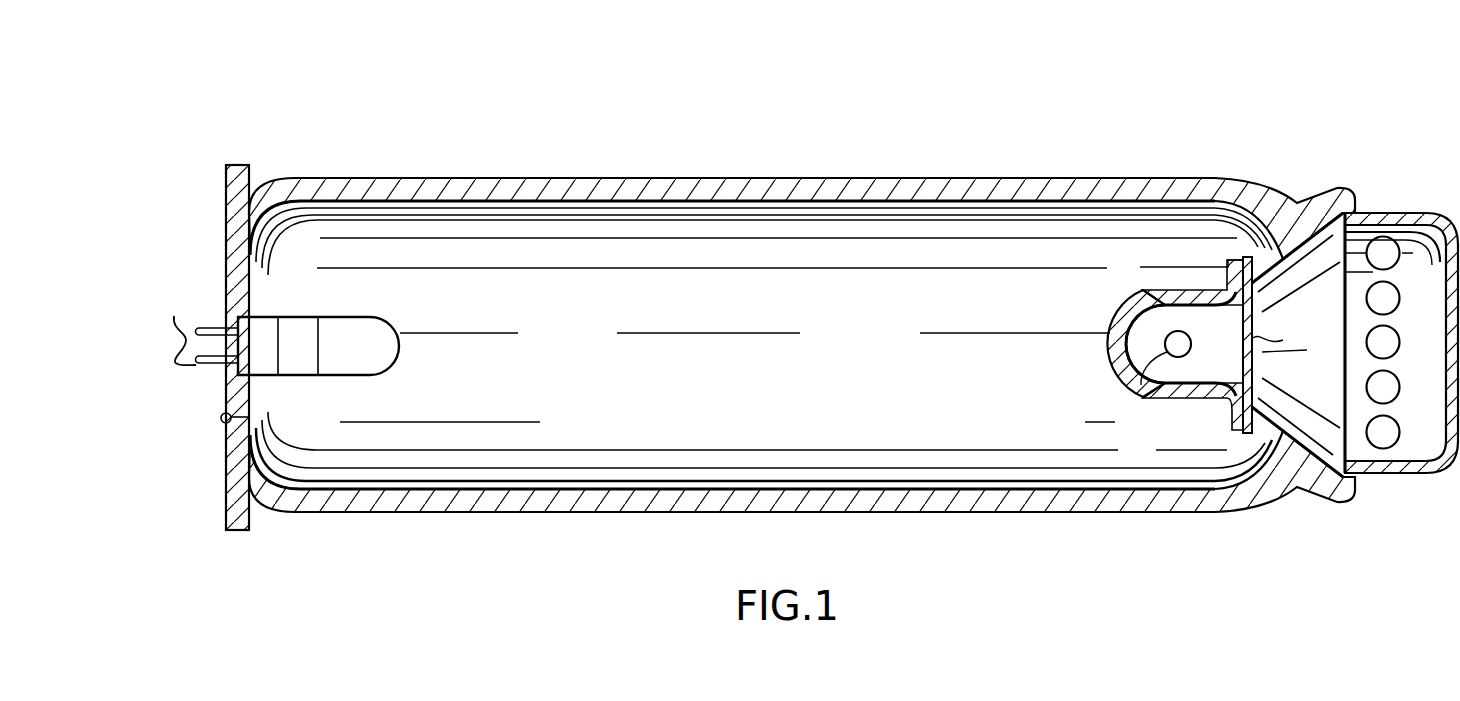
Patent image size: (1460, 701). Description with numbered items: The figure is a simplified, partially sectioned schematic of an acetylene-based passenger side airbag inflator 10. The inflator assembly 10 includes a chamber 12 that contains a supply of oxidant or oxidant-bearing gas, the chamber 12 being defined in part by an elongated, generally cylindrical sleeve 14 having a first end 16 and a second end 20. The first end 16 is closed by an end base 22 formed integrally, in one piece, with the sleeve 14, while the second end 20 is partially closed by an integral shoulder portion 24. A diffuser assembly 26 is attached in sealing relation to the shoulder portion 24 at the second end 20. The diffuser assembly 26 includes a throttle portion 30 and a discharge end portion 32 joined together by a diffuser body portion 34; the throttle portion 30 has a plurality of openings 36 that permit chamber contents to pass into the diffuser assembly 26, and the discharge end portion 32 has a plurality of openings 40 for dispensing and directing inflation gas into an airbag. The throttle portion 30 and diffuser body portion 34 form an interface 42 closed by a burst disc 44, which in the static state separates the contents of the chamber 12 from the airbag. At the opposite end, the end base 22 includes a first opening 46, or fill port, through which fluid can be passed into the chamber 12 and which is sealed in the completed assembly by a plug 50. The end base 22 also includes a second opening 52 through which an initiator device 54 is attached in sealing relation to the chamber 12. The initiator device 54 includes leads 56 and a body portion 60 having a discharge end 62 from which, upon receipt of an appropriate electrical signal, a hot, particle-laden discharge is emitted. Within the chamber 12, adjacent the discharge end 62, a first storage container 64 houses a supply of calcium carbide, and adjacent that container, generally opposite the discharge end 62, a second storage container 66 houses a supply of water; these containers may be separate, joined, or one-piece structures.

The airbag inflator 10 is at (873, 106).
The chamber 12 is at (606, 228).
The sleeve 14 is at (712, 186).
The first end 16 is at (268, 173).
The second end 20 is at (1308, 183).
The end base 22 is at (232, 205).
The shoulder portion 24 is at (1273, 491).
The diffuser assembly 26 is at (1341, 187).
The throttle portion 30 is at (1143, 290).
The discharge end portion 32 is at (1412, 213).
The diffuser body portion 34 is at (1318, 478).
The openings 36 is at (1177, 394).
The openings 40 is at (1385, 449).
The interface 42 is at (1247, 257).
The burst disc 44 is at (1332, 320).
The first opening 46 is at (240, 425).
The plug 50 is at (221, 418).
The second opening 52 is at (226, 393).
The initiator device 54 is at (227, 320).
The leads 56 is at (175, 318).
The body portion 60 is at (262, 322).
The discharge end 62 is at (280, 350).
The first storage container 64 is at (303, 314).
The second storage container 66 is at (397, 333).